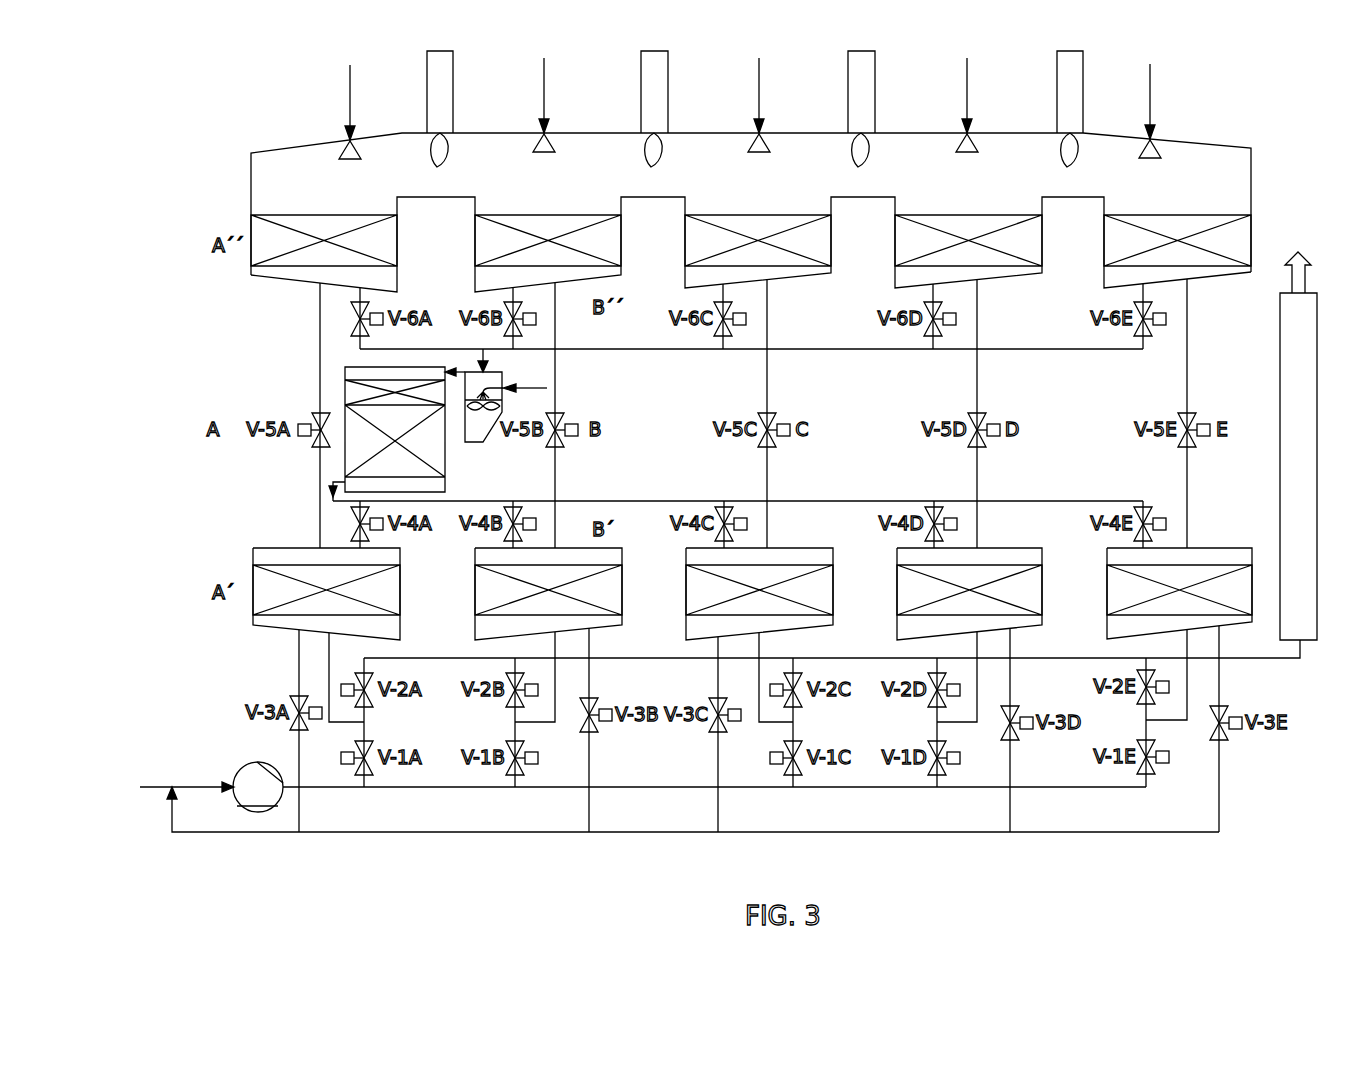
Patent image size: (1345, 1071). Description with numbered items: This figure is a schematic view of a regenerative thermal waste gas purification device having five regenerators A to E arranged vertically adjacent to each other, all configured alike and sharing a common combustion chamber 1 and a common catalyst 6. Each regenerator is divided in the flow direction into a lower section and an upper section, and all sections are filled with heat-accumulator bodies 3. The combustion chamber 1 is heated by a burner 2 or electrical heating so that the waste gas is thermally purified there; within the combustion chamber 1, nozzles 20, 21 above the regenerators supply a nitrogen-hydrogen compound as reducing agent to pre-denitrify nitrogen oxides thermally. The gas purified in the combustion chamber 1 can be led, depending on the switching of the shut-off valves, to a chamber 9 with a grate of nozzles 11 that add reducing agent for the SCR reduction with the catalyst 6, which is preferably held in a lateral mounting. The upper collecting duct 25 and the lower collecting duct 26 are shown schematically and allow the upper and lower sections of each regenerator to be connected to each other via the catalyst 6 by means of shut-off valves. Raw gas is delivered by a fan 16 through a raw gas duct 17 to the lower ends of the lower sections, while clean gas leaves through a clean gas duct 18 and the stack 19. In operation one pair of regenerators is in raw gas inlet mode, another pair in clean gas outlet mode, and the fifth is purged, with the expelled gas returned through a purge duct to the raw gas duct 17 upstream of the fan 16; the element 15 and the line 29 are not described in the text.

The combustion chamber 1 is at (811, 167).
The burner 2 is at (445, 79).
The heat-accumulator bodies 3 is at (377, 254).
The catalyst 6 is at (435, 450).
The chamber 9 is at (487, 425).
The nozzles 11 is at (488, 386).
The packing 15 is at (357, 395).
The fan 16 is at (241, 771).
The raw gas duct 17 is at (638, 787).
The clean gas duct 18 is at (1260, 658).
The stack 19 is at (1280, 358).
The nozzles 20 is at (342, 143).
The nozzles 21 is at (537, 138).
The upper collecting duct 25 is at (812, 349).
The lower collecting duct 26 is at (812, 501).
The return line 29 is at (640, 832).